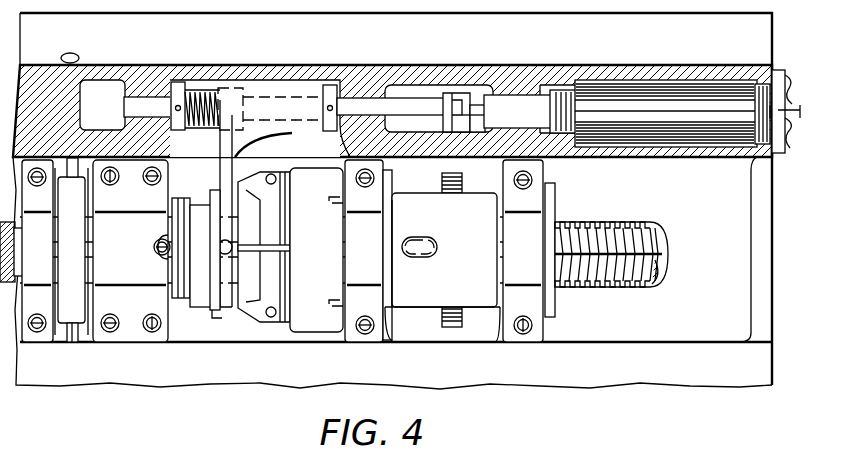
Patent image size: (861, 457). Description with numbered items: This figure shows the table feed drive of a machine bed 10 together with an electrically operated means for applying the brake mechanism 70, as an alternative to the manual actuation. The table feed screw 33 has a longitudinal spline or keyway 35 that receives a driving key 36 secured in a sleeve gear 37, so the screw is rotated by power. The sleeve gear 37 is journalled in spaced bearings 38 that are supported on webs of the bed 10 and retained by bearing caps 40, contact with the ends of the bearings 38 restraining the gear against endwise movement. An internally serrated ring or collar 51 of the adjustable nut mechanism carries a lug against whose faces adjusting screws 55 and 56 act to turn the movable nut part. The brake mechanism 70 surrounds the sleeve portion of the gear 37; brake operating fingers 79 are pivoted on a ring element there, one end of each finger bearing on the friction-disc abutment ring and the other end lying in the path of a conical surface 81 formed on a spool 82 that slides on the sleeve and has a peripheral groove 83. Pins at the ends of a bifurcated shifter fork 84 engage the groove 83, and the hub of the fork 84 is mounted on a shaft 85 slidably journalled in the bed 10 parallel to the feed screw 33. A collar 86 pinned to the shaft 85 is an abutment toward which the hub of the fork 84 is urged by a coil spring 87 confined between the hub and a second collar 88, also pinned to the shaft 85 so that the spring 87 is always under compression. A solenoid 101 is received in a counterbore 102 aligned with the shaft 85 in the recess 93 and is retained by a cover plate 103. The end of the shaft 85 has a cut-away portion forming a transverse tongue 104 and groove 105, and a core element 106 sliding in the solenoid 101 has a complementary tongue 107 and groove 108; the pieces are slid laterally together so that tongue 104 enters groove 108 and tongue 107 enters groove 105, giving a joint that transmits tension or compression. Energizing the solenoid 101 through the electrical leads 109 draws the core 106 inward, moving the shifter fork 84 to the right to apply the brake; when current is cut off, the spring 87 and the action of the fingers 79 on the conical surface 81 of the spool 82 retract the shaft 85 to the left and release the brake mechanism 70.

The bed 10 is at (188, 380).
The table feed screw 33 is at (598, 222).
The longitudinal spline or keyway 35 is at (630, 250).
The driving key 36 is at (418, 256).
The sleeve gear 37 is at (210, 207).
The bearings 38 is at (549, 200).
The bearing caps 40 is at (533, 334).
The internally serrated ring or collar 51 is at (76, 312).
The adjusting screw 55 is at (82, 166).
The adjusting screw 56 is at (68, 333).
The brake mechanism 70 is at (350, 192).
The brake operating fingers 79 is at (270, 252).
The conical surface 81 is at (246, 296).
The spool 82 is at (212, 292).
The peripheral groove 83 is at (226, 307).
The shifter fork 84 is at (222, 160).
The shaft 85 is at (402, 108).
The collar 86 is at (329, 85).
The coil spring 87 is at (204, 92).
The collar 88 is at (178, 84).
The recess 93 is at (554, 90).
The solenoid 101 is at (680, 92).
The counterbore 102 is at (648, 88).
The cover plate 103 is at (768, 168).
The tongue 104 is at (476, 122).
The groove 105 is at (456, 125).
The core element 106 is at (540, 105).
The tongue 107 is at (465, 108).
The groove 108 is at (474, 113).
The electrical leads 109 is at (790, 72).